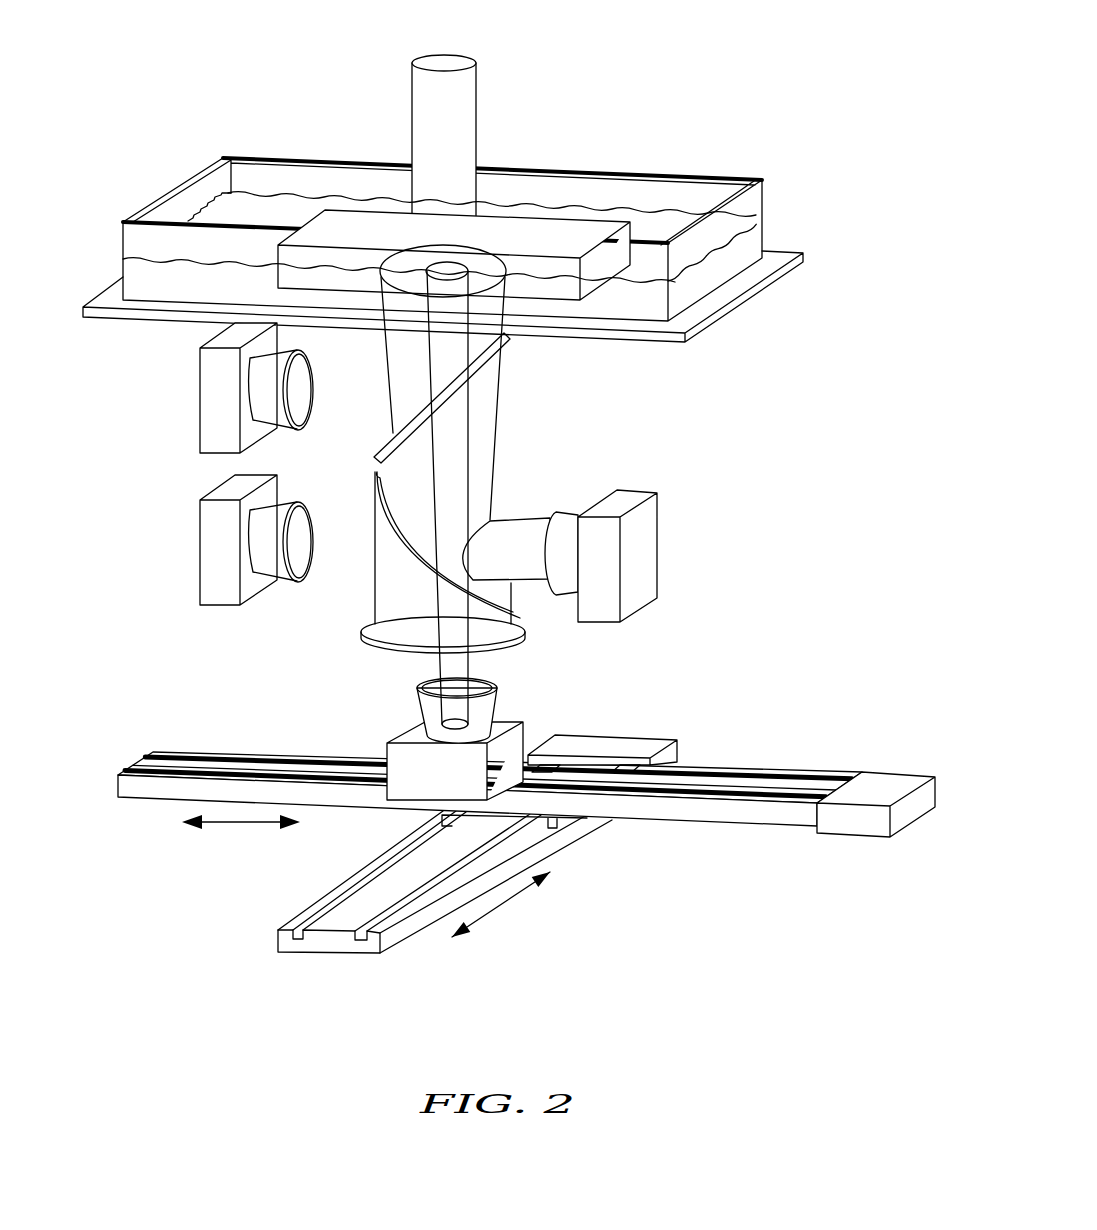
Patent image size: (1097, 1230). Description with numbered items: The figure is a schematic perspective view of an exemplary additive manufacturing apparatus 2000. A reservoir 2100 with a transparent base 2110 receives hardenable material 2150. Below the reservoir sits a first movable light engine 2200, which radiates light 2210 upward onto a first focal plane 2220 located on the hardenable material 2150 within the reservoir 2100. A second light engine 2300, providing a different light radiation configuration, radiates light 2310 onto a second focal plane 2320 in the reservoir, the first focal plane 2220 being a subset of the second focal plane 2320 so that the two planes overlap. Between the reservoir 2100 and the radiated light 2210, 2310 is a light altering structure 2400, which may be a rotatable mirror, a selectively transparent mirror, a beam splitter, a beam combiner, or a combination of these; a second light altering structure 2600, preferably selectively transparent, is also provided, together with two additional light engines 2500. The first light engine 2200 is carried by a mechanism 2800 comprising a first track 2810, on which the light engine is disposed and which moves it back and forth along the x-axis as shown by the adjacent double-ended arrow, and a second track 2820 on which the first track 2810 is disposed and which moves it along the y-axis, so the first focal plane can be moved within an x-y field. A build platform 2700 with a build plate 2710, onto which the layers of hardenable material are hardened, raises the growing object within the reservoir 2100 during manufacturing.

The apparatus 2000 is at (707, 103).
The reservoir 2100 is at (180, 182).
The transparent base 2110 is at (643, 330).
The hardenable material 2150 is at (710, 267).
The first movable light engine 2200 is at (513, 745).
The light 2210 is at (447, 667).
The first focal plane 2220 is at (463, 270).
The second light engine 2300 is at (640, 553).
The light 2310 is at (520, 520).
The second focal plane 2320 is at (397, 273).
The light altering structure 2400 is at (402, 597).
The additional light engines 2500 is at (215, 540).
The second light altering structure 2600 is at (390, 437).
The build platform 2700 is at (455, 90).
The build plate 2710 is at (558, 288).
The mechanism 2800 is at (620, 882).
The first track 2810 is at (162, 750).
The second track 2820 is at (333, 942).